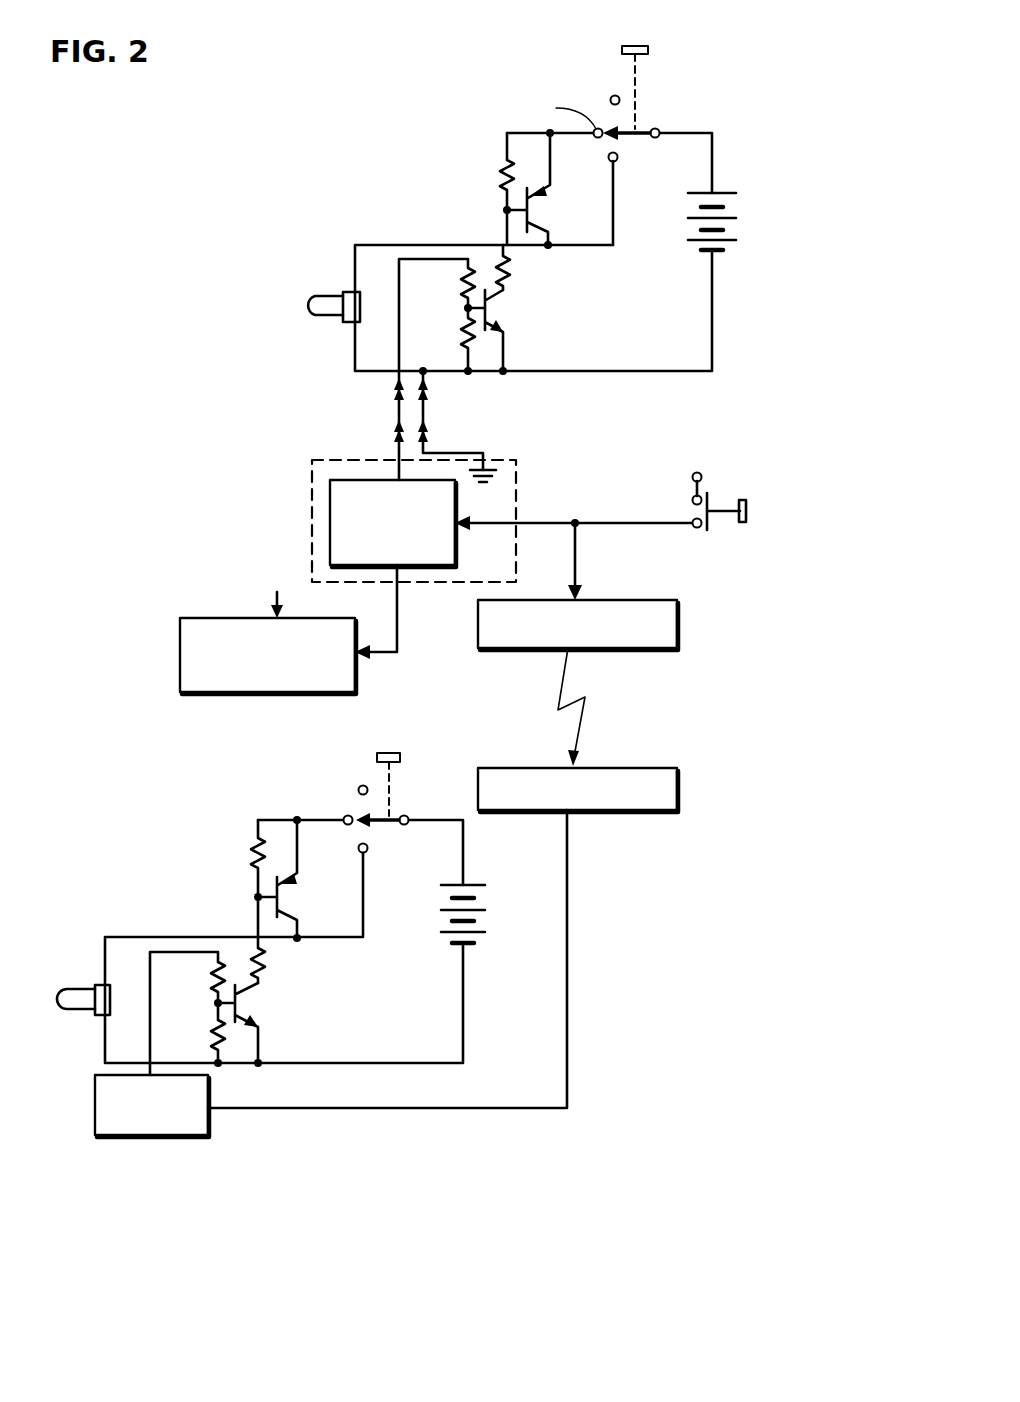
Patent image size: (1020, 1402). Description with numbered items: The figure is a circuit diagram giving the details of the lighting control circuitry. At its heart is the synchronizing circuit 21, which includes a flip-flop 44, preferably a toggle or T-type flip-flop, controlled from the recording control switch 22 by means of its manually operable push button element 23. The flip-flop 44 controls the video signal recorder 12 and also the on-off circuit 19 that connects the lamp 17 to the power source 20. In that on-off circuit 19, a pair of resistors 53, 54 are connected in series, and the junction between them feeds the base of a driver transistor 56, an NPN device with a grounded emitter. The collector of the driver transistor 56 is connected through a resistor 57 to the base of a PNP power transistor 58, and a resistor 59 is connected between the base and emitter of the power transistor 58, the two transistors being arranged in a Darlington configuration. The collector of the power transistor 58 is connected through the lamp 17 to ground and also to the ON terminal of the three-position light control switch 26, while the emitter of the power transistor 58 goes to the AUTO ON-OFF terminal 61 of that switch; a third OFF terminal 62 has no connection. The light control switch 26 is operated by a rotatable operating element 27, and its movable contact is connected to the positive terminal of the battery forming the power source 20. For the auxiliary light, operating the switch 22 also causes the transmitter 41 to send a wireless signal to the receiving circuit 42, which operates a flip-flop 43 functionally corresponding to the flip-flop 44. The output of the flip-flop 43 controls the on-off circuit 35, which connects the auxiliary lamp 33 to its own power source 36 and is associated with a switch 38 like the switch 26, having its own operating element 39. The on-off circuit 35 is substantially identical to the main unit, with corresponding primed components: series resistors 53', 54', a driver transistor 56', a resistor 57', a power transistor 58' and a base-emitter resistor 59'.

The video signal recorder 12 is at (180, 635).
The lamp 17 is at (343, 322).
The on-off circuit 19 is at (432, 190).
The power source 20 is at (693, 243).
The synchronizing circuit 21 is at (518, 460).
The recording control switch 22 is at (702, 540).
The push button element 23 is at (748, 505).
The light control switch 26 is at (672, 115).
The operating element 27 is at (637, 46).
The lamp 33 is at (60, 990).
The on-off circuit 35 is at (190, 880).
The power source 36 is at (475, 885).
The switch 38 is at (408, 801).
The operating element 39 is at (377, 757).
The transmitter 41 is at (677, 635).
The receiving circuit 42 is at (677, 778).
The flip-flop 43 is at (190, 1137).
The flip-flop 44 is at (330, 498).
The resistor 53 is at (422, 286).
The resistor 54 is at (464, 370).
The driver transistor 56 is at (502, 351).
The resistor 57 is at (462, 254).
The power transistor 58 is at (501, 189).
The resistor 59 is at (477, 178).
The AUTO ON-OFF terminal 61 is at (604, 130).
The OFF terminal 62 is at (620, 100).
The resistor 53' is at (186, 985).
The resistor 54' is at (126, 1033).
The driver transistor 56' is at (259, 1069).
The resistor 57' is at (236, 932).
The power transistor 58' is at (288, 854).
The resistor 59' is at (225, 864).